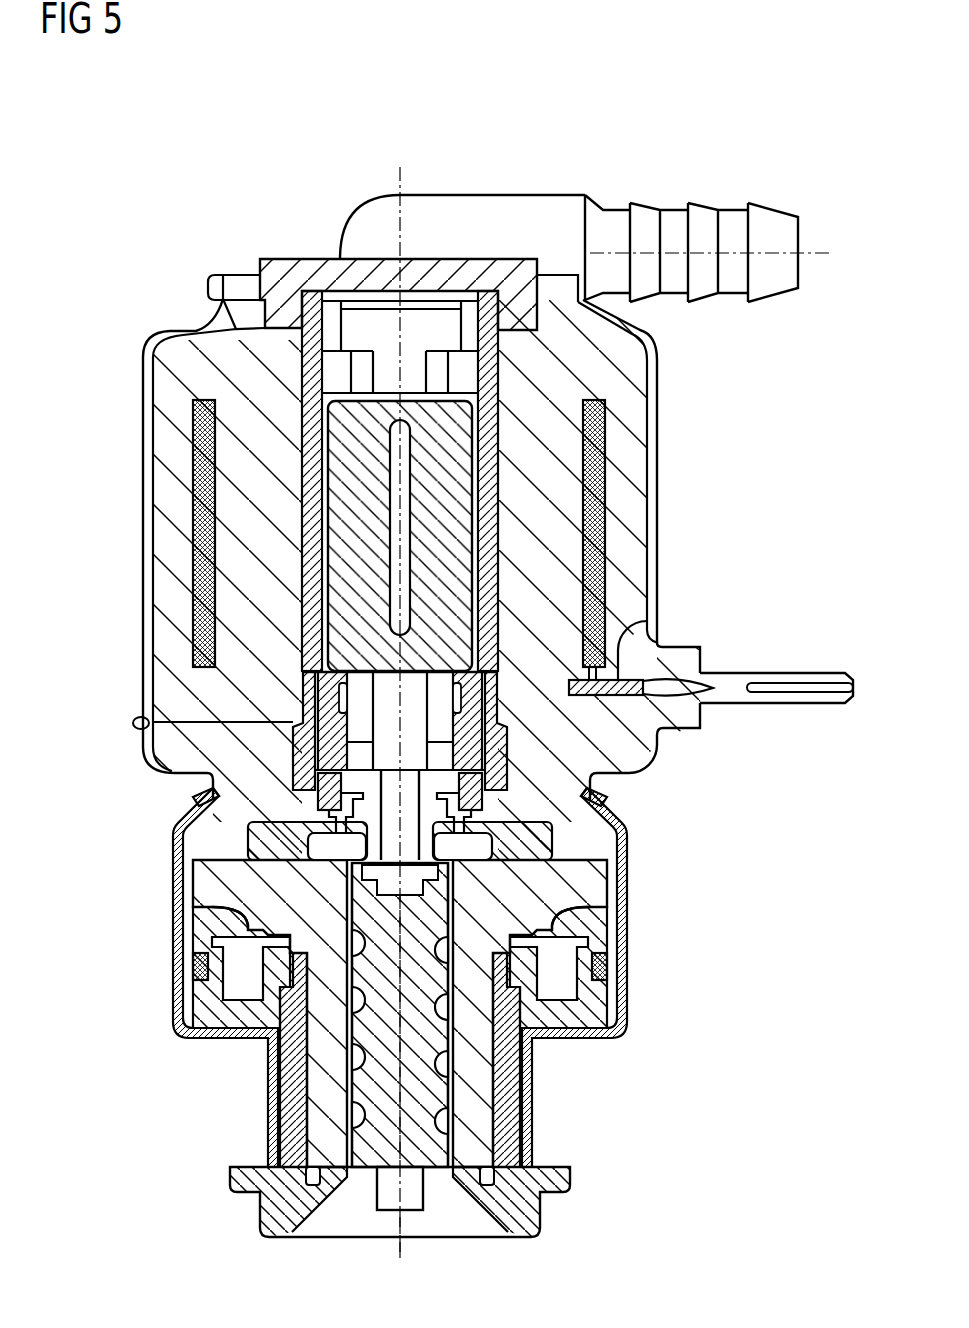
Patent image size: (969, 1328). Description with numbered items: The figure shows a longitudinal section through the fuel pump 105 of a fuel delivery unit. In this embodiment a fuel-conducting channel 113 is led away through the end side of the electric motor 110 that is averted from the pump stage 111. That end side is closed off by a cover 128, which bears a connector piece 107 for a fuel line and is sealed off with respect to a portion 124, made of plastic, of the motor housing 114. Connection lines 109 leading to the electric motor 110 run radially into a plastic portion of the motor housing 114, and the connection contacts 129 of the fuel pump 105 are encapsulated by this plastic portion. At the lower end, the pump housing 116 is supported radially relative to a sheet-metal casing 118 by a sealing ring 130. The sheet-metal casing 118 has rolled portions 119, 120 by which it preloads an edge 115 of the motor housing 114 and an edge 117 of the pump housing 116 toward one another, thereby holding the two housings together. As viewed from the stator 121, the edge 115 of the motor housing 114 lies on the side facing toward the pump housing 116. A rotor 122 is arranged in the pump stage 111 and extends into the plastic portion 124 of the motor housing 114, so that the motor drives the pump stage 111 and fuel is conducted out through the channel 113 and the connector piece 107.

The fuel pump 105 is at (708, 455).
The connector piece 107 is at (763, 233).
The connection lines 109 is at (815, 687).
The electric motor 110 is at (625, 427).
The pump stage 111 is at (584, 887).
The fuel-conducting channel 113 is at (336, 369).
The motor housing 114 is at (660, 572).
The edge of the motor housing 115 is at (217, 841).
The pump housing 116 is at (598, 998).
The edge of the pump housing 117 is at (237, 990).
The sheet-metal casing 118 is at (235, 906).
The rolled portion 119 is at (188, 797).
The rolled portion 120 is at (184, 1030).
The stator 121 is at (186, 508).
The rotor 122 is at (360, 443).
The plastic portion of the motor housing 124 is at (637, 506).
The cover 128 is at (284, 288).
The connection contacts 129 is at (600, 681).
The sealing ring 130 is at (606, 965).